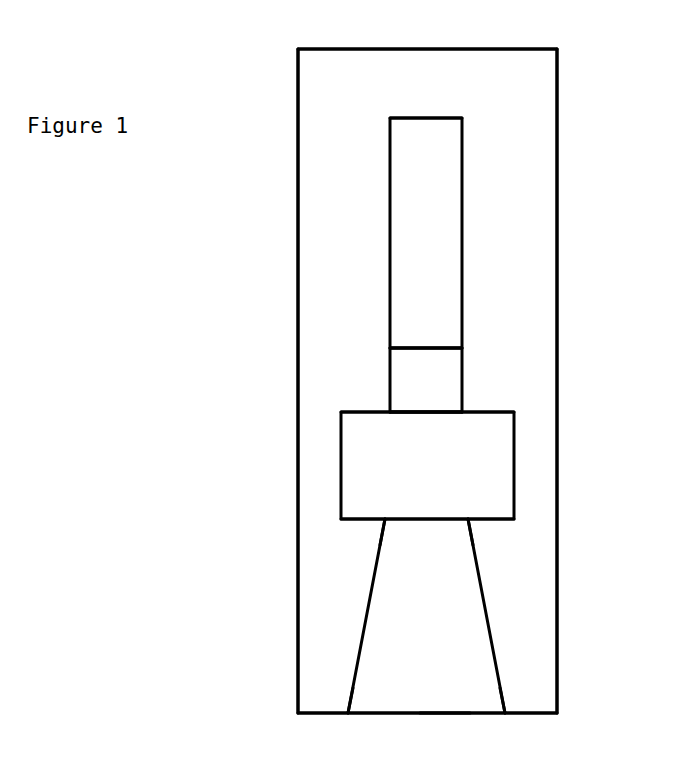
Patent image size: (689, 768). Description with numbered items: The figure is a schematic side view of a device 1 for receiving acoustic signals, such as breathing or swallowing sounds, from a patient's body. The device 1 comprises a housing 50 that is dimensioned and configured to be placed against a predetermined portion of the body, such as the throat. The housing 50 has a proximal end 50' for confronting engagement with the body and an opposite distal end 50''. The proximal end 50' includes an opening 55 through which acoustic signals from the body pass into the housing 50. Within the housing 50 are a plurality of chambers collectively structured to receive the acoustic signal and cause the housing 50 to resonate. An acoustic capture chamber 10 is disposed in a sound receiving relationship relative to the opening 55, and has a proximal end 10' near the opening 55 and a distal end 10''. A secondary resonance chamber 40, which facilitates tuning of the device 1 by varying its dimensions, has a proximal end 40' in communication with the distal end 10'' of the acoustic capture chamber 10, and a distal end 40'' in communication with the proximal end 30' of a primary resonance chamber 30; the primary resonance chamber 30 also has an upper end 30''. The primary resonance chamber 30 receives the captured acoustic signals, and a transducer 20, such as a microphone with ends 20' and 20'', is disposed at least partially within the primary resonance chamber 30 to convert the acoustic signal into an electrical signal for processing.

The device 1 is at (138, 290).
The acoustic capture chamber 10 is at (492, 616).
The proximal end of acoustic capture chamber 10' is at (352, 710).
The distal end of acoustic capture chamber 10'' is at (516, 536).
The transducer 20 is at (326, 388).
The lower end of intermediate member 20' is at (515, 392).
The upper end of intermediate member 20'' is at (336, 289).
The primary resonance chamber 30 is at (339, 233).
The proximal end of primary resonance chamber 30' is at (511, 357).
The upper end of upper member 30'' is at (331, 85).
The secondary resonance chamber 40 is at (489, 465).
The proximal end of secondary resonance chamber 40' is at (352, 524).
The distal end of secondary resonance chamber 40'' is at (354, 460).
The housing 50 is at (461, 381).
The proximal end of housing 50' is at (382, 672).
The distal end of housing 50'' is at (468, 66).
The opening 55 is at (449, 723).